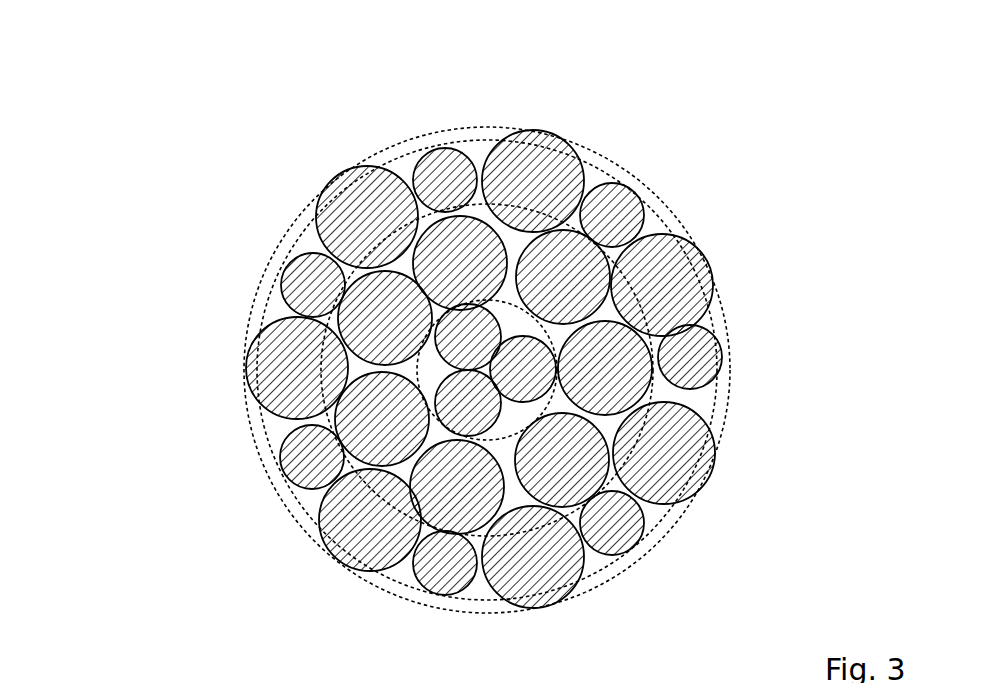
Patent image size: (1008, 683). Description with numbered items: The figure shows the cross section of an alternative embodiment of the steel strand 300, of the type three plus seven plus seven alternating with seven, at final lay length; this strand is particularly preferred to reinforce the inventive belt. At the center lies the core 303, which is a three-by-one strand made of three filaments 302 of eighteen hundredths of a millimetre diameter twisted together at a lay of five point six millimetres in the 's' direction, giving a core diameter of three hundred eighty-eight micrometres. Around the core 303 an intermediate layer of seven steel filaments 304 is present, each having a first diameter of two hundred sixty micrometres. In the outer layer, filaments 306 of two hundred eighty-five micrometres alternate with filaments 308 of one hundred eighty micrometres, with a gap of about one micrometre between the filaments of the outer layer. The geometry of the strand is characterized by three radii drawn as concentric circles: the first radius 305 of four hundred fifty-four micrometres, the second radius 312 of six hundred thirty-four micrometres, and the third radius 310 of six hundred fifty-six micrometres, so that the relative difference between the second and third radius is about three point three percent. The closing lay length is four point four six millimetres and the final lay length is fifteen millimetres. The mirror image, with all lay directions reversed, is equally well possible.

The steel strand 300 is at (176, 130).
The filaments 302 is at (294, 270).
The core 303 is at (260, 290).
The steel filaments 304 is at (258, 365).
The first radius 305 is at (365, 370).
The filaments 306 is at (725, 463).
The filaments 308 is at (692, 536).
The third radius 310 is at (510, 362).
The second radius 312 is at (540, 370).